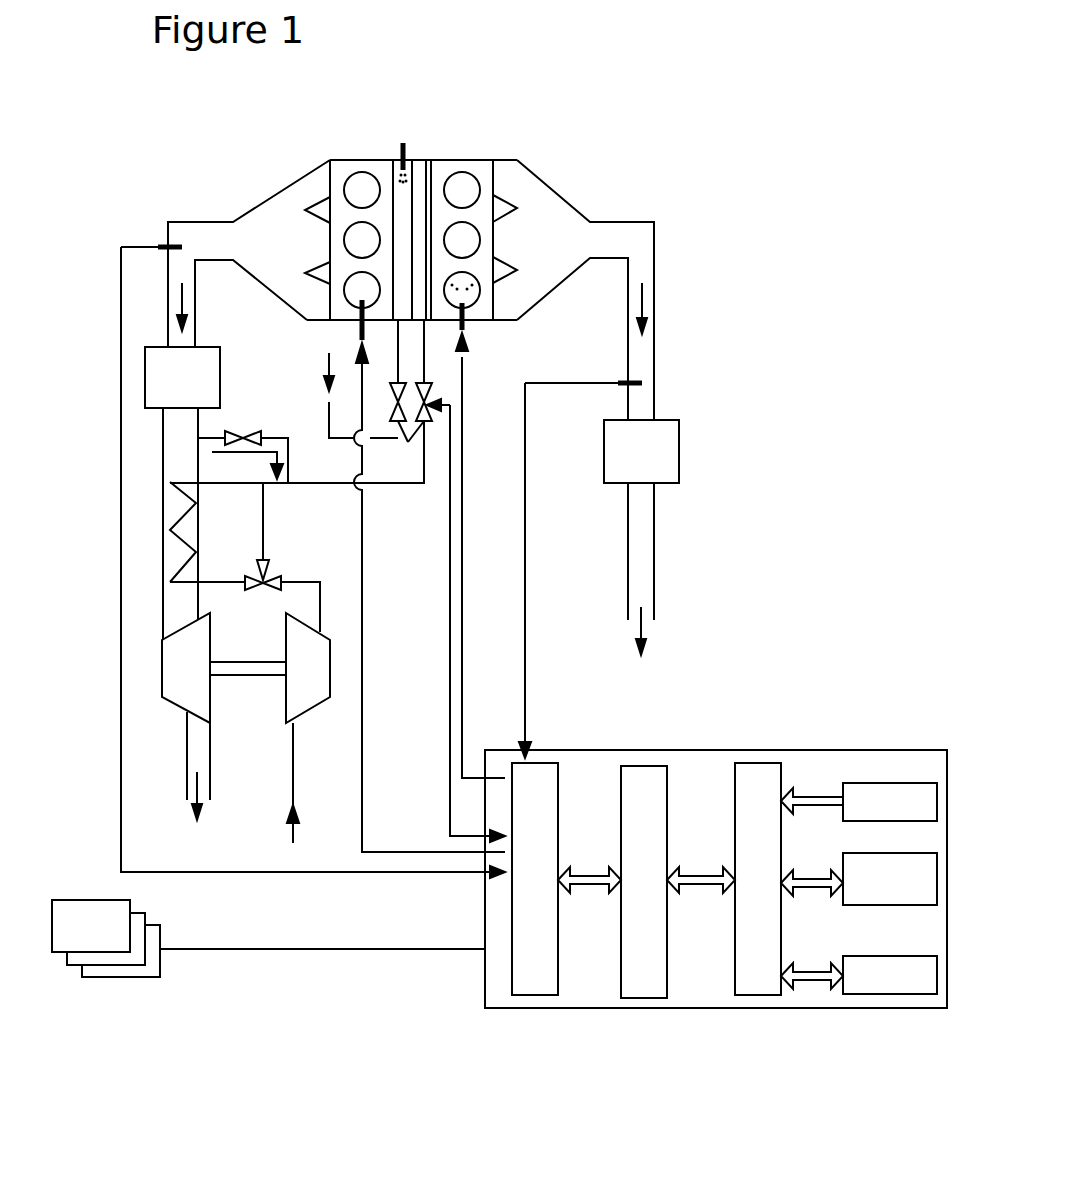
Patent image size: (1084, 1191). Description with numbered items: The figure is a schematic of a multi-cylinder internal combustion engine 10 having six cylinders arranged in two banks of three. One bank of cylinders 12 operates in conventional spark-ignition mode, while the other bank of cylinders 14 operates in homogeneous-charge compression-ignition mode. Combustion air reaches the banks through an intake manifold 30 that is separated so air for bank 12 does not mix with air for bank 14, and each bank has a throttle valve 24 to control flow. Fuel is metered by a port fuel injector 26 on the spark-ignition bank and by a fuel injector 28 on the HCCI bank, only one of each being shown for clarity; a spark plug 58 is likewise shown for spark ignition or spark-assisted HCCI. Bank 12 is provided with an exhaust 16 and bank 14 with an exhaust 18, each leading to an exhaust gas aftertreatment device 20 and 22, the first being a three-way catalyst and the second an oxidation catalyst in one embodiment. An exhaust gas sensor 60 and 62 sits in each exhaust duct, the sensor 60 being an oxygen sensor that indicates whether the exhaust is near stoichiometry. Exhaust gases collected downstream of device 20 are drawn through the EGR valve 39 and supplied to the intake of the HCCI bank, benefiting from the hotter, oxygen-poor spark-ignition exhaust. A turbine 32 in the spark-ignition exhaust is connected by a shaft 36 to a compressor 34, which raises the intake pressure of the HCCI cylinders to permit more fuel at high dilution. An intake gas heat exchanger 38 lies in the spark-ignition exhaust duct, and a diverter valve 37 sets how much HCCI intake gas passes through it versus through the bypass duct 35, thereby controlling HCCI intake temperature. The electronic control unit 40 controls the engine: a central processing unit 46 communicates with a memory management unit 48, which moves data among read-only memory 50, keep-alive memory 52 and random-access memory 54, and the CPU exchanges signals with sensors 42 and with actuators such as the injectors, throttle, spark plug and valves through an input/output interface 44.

The internal combustion engine 10 is at (368, 98).
The bank of cylinders 12 is at (342, 158).
The bank of cylinders 14 is at (470, 158).
The exhaust 16 is at (284, 252).
The exhaust 18 is at (521, 251).
The exhaust gas aftertreatment device 20 is at (166, 392).
The exhaust gas aftertreatment device 22 is at (626, 466).
The throttle valve 24 is at (337, 581).
The fuel injector 26 is at (402, 143).
The fuel injector 28 is at (465, 320).
The intake manifold 30 is at (427, 160).
The turbine 32 is at (171, 684).
The compressor 34 is at (292, 684).
The bypass duct 35 is at (265, 521).
The shaft 36 is at (242, 662).
The diverter valve 37 is at (275, 577).
The intake gas heat exchanger 38 is at (188, 547).
The EGR valve 39 is at (257, 432).
The electronic control unit 40 is at (716, 832).
The sensors 42 is at (155, 978).
The input/output interface 44 is at (538, 765).
The central processing unit 46 is at (632, 766).
The memory management unit 48 is at (752, 765).
The read-only memory 50 is at (875, 782).
The keep-alive memory 52 is at (887, 905).
The random-access memory 54 is at (877, 955).
The spark plug 58 is at (358, 327).
The exhaust gas sensor 60 is at (166, 246).
The exhaust gas sensor 62 is at (623, 382).